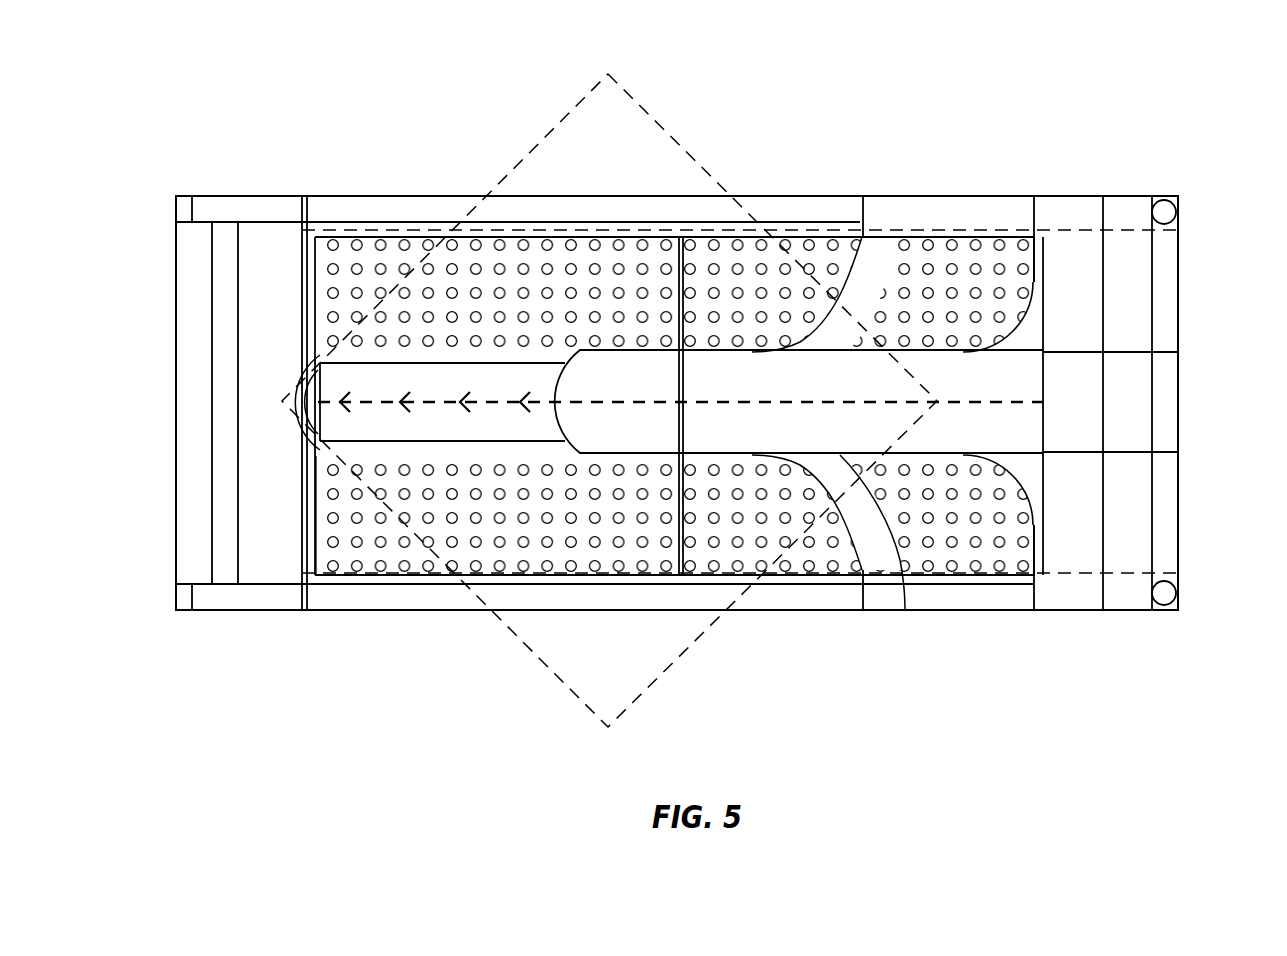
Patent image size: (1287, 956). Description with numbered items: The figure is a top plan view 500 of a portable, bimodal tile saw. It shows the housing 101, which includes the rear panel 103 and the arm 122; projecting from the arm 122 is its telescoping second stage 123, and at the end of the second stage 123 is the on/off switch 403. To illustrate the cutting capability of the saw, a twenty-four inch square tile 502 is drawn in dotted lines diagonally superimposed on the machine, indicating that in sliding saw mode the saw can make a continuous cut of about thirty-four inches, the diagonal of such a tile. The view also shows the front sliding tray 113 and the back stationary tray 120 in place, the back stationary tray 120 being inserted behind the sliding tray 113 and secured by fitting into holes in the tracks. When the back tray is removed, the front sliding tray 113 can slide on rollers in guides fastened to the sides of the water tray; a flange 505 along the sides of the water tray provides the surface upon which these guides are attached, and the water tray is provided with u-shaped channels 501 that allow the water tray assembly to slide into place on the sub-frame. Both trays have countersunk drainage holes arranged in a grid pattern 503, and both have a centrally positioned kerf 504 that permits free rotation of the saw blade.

The top plan view 500 is at (912, 98).
The tile 502 is at (658, 121).
The u-shaped channels 501 is at (805, 207).
The arm 122 is at (841, 398).
The flange 505 is at (1015, 207).
The housing 101 is at (1088, 300).
The rear panel 103 is at (1182, 408).
The kerf 504 is at (955, 410).
The second stage 123 is at (418, 376).
The on/off switch 403 is at (300, 382).
The sliding tray 113 is at (410, 560).
The back stationary tray 120 is at (730, 578).
The grid pattern 503 is at (922, 560).